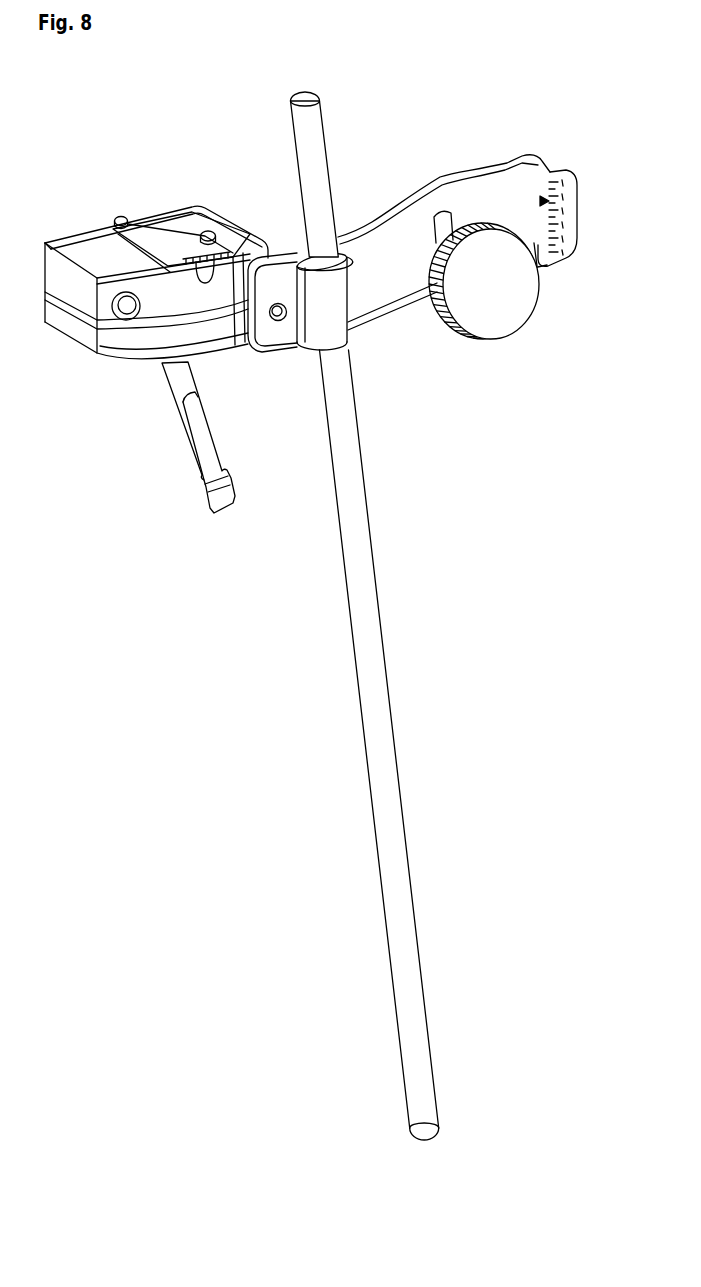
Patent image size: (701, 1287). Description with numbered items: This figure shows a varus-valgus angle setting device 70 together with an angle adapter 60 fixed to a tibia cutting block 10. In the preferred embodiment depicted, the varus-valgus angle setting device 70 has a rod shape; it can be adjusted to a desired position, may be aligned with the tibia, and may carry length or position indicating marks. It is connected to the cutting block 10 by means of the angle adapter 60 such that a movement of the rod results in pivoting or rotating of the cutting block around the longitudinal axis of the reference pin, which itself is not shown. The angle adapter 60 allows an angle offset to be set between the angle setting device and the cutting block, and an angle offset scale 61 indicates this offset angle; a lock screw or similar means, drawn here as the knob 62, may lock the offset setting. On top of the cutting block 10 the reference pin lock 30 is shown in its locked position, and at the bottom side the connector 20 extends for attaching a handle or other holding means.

The tibia cutting block 10 is at (201, 186).
The connector 20 is at (216, 408).
The reference pin lock 30 is at (141, 231).
The angle adapter 60 is at (433, 149).
The angle offset scale 61 is at (551, 171).
The knob 62 is at (497, 294).
The varus-valgus angle setting device 70 is at (343, 453).